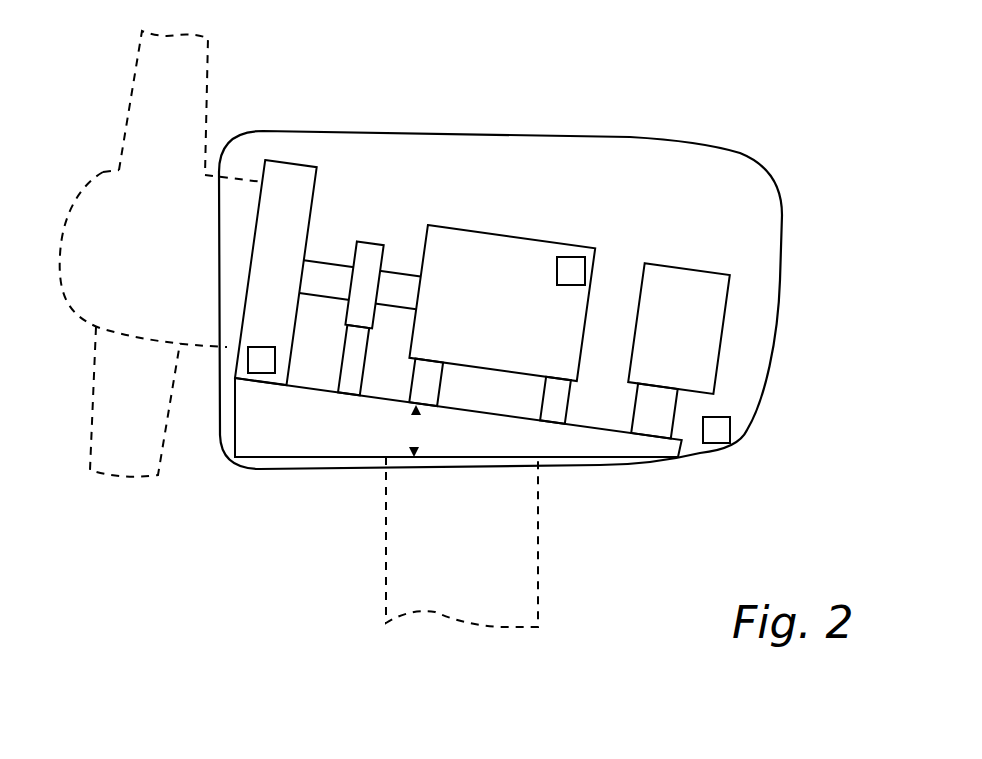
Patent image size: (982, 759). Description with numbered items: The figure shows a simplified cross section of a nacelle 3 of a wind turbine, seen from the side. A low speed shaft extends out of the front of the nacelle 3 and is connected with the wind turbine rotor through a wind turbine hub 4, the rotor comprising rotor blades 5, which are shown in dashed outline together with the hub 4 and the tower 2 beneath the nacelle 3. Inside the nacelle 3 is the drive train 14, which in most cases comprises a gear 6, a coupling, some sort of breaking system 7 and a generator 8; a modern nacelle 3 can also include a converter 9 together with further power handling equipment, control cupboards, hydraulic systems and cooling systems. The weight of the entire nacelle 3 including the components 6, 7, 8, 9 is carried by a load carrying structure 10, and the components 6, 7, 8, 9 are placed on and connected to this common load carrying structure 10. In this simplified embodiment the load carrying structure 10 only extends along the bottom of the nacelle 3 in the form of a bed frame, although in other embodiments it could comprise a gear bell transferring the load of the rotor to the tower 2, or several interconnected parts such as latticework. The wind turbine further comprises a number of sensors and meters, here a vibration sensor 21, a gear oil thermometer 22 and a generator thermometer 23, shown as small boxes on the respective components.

The tower 2 is at (482, 575).
The nacelle 3 is at (810, 153).
The wind turbine hub 4 is at (102, 218).
The rotor blade 5 is at (182, 98).
The gear 6 is at (290, 185).
The breaking system 7 is at (371, 257).
The generator 8 is at (478, 268).
The converter 9 is at (693, 303).
The load carrying structure 10 is at (647, 448).
The drive train 14 is at (388, 292).
The vibration sensor 21 is at (735, 433).
The gear oil thermometer 22 is at (263, 373).
The generator thermometer 23 is at (582, 252).